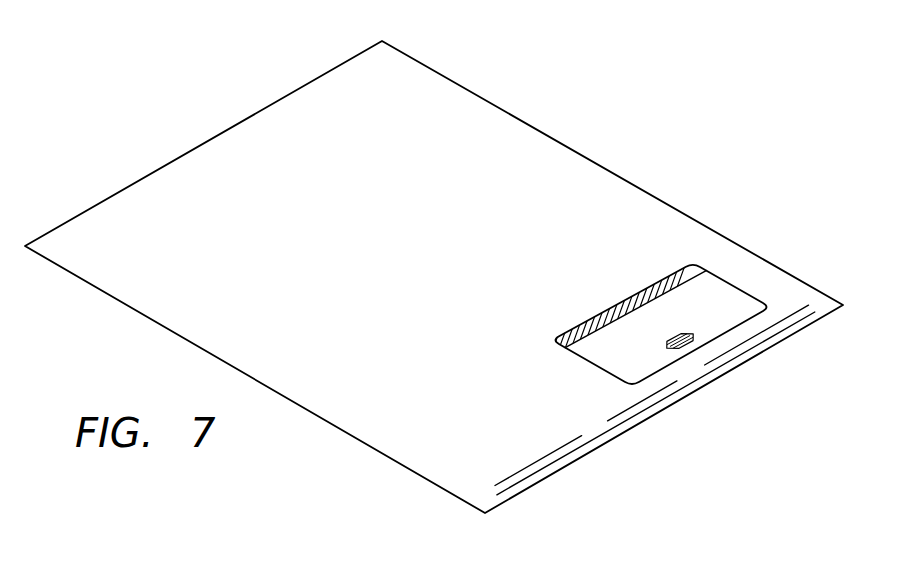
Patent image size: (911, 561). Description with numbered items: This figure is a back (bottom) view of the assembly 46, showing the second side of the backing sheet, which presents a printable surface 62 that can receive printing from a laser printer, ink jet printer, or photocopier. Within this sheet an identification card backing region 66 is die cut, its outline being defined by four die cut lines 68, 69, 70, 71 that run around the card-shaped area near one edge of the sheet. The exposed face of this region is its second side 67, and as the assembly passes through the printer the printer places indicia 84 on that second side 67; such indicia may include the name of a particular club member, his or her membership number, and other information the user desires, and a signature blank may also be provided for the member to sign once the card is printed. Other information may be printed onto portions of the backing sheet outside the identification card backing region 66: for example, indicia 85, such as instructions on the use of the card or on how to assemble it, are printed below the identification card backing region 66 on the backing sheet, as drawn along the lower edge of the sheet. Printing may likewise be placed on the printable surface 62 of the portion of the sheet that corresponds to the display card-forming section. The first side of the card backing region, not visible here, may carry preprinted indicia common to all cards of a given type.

The assembly 46 is at (645, 171).
The printable surface 62 is at (450, 112).
The identification card backing region 66 is at (627, 381).
The second side 67 is at (670, 293).
The die cut line 68 is at (733, 285).
The die cut line 69 is at (617, 297).
The die cut line 70 is at (593, 364).
The die cut line 71 is at (663, 372).
The indicia 84 is at (742, 312).
The indicia 85 is at (730, 362).